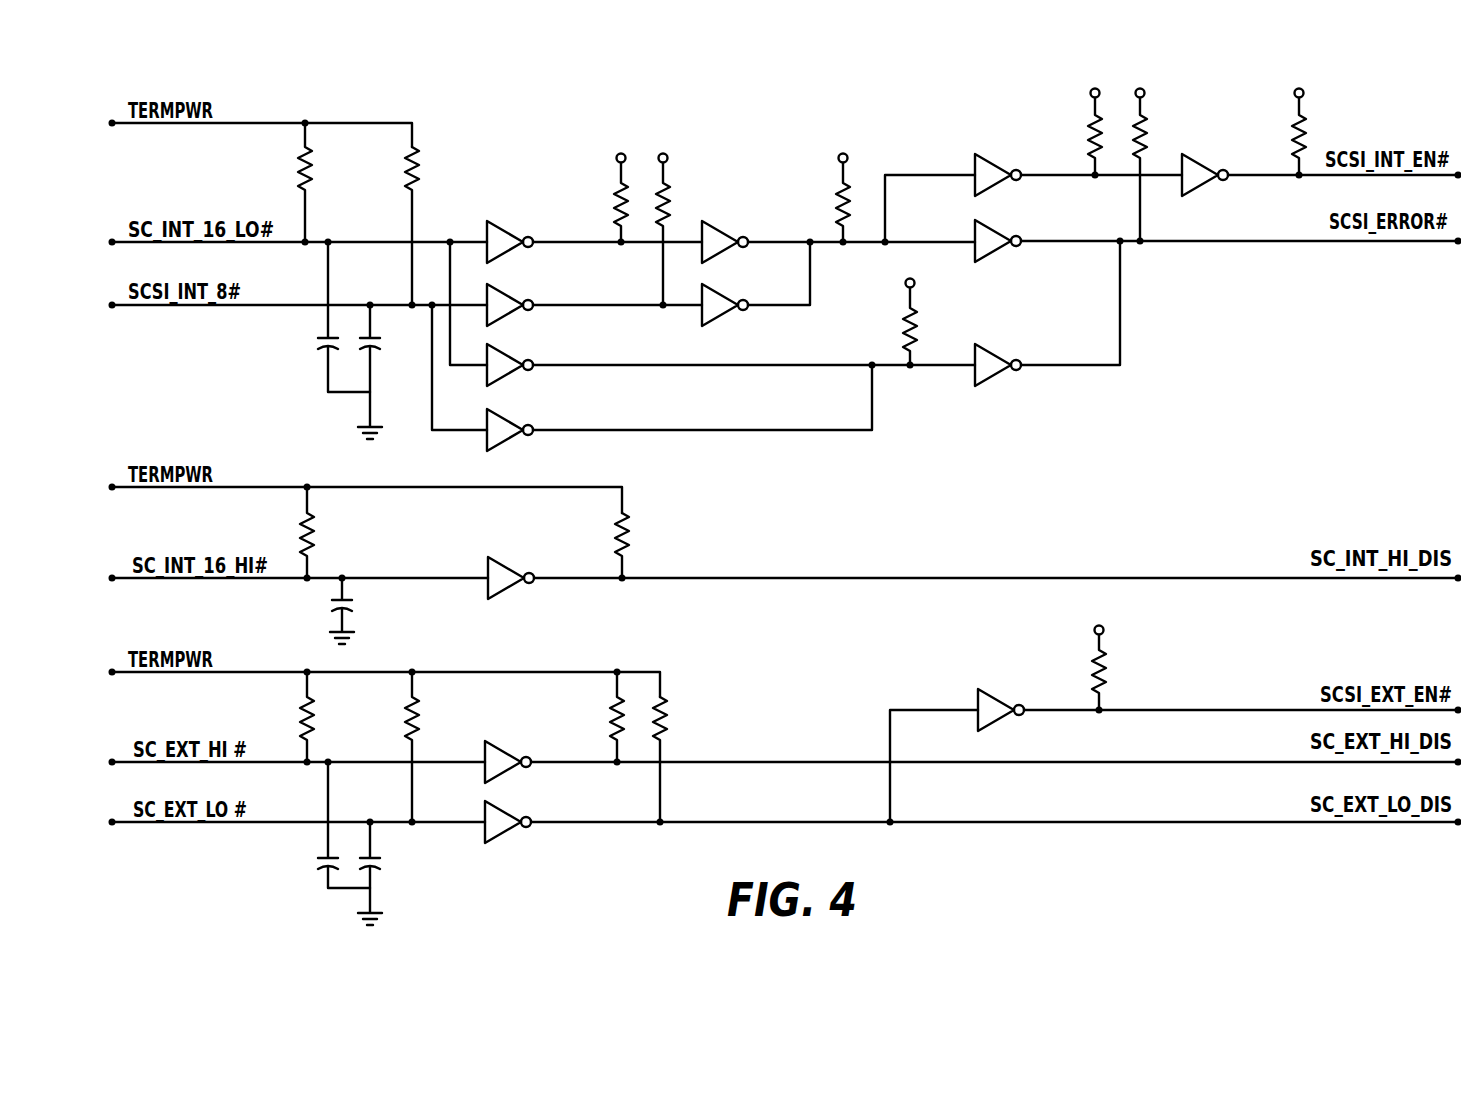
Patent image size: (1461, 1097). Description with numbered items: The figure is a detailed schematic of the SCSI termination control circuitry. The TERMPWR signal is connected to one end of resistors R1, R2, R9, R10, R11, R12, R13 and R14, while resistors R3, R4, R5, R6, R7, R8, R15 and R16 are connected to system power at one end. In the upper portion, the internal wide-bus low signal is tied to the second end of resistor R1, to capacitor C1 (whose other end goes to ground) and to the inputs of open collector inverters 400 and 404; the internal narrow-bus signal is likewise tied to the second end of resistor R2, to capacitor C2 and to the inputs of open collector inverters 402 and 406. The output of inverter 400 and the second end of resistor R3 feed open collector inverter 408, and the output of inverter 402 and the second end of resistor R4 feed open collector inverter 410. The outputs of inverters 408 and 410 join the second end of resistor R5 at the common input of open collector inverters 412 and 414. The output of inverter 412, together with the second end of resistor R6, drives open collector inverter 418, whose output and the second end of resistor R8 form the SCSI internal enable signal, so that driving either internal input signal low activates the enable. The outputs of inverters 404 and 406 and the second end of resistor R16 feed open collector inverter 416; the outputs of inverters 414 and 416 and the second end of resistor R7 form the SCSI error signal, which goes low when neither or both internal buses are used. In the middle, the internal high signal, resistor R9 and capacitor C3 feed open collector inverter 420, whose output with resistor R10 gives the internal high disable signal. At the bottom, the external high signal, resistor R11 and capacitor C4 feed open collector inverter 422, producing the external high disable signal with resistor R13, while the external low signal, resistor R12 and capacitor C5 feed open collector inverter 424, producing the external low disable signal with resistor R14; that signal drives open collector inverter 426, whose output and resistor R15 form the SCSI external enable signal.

The resistor R1 is at (300, 166).
The resistor R2 is at (418, 154).
The resistor R3 is at (616, 191).
The resistor R4 is at (669, 191).
The resistor R5 is at (838, 194).
The resistor R6 is at (1090, 127).
The resistor R7 is at (1146, 127).
The resistor R8 is at (1305, 121).
The resistor R9 is at (314, 539).
The resistor R10 is at (628, 539).
The resistor R11 is at (313, 726).
The resistor R12 is at (418, 726).
The resistor R13 is at (610, 721).
The resistor R14 is at (666, 726).
The resistor R15 is at (1105, 669).
The resistor R16 is at (916, 312).
The capacitor C1 is at (322, 346).
The capacitor C2 is at (376, 346).
The capacitor C3 is at (352, 606).
The capacitor C4 is at (322, 867).
The capacitor C5 is at (380, 867).
The open collector inverter 400 is at (516, 234).
The open collector inverter 402 is at (511, 297).
The open collector inverter 404 is at (511, 358).
The open collector inverter 406 is at (511, 422).
The open collector inverter 408 is at (727, 233).
The open collector inverter 410 is at (727, 297).
The open collector inverter 412 is at (995, 168).
The open collector inverter 414 is at (995, 233).
The open collector inverter 416 is at (998, 358).
The open collector inverter 418 is at (1203, 168).
The open collector inverter 420 is at (511, 568).
The open collector inverter 422 is at (508, 751).
The open collector inverter 424 is at (508, 813).
The open collector inverter 426 is at (998, 701).